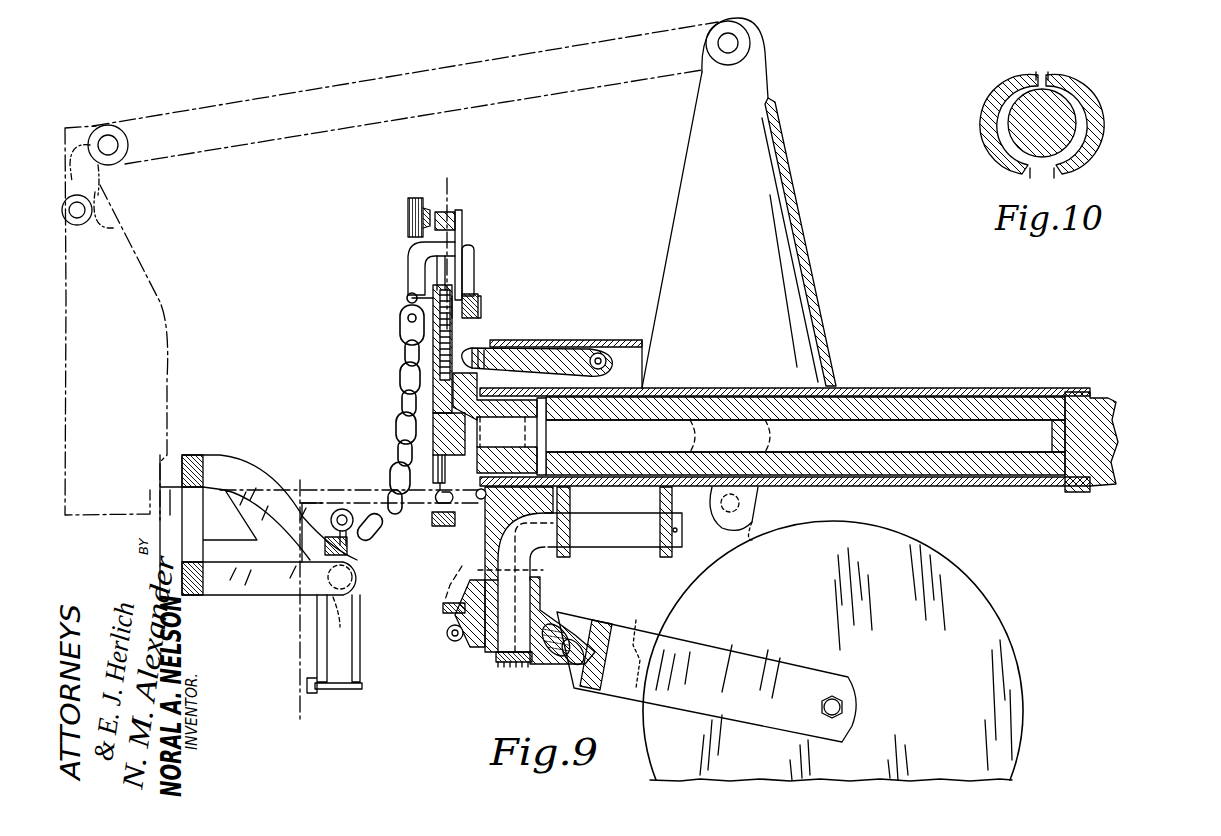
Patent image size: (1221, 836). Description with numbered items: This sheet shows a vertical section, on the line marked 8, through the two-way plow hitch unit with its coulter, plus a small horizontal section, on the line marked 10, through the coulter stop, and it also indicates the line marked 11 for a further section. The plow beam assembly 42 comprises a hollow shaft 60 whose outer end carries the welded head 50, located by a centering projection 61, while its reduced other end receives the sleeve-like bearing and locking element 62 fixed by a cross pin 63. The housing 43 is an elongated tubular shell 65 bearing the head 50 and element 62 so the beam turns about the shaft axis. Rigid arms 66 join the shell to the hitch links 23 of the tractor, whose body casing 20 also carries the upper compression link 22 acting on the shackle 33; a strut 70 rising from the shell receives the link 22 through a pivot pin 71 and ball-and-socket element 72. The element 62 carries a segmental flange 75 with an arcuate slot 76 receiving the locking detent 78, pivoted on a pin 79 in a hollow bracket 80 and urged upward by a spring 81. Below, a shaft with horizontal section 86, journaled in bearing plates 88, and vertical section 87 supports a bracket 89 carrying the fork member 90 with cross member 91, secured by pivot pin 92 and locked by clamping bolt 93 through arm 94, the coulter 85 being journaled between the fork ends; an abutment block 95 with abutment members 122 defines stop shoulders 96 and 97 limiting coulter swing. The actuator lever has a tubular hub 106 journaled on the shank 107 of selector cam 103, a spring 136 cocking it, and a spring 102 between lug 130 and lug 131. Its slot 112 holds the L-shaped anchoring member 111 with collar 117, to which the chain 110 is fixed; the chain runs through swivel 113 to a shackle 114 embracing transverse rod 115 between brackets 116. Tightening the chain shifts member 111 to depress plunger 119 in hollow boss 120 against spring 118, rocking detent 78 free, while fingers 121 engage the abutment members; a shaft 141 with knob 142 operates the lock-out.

In FIG. 9, the section line 8- 8 is at (420, 181).
In FIG. 9, the section line 10- 10 is at (475, 562).
In FIG. 9, the section line 11- 11 is at (448, 204).
In FIG. 9, the body casing 20 is at (152, 322).
In FIG. 9, the upper compression link 22 is at (533, 54).
In FIG. 9, the draft or hitch links 23 is at (745, 532).
In FIG. 9, the angle lever or shackle 33 is at (100, 188).
In FIG. 9, the plow beam assembly 42 is at (1128, 382).
In FIG. 9, the housing 43 is at (878, 382).
In FIG. 9, the head 50 is at (1118, 434).
In FIG. 9, the shaft 60 is at (930, 396).
In FIG. 9, the centering projection 61 is at (1052, 432).
In FIG. 9, the bearing and locking element 62 is at (541, 395).
In FIG. 9, the cross pin 63 is at (540, 436).
In FIG. 9, the tubular shell 65 is at (895, 487).
In FIG. 9, the rigid arms 66 is at (760, 496).
In FIG. 9, the strut 70 is at (793, 176).
In FIG. 9, the pivot pin 71 is at (748, 48).
In FIG. 9, the ball-and-socket element 72 is at (720, 62).
In FIG. 9, the segmental flange 75 is at (492, 346).
In FIG. 9, the arcuate slot 76 is at (527, 346).
In FIG. 9, the locking detent 78 is at (600, 346).
In FIG. 9, the pin 79 is at (614, 361).
In FIG. 9, the hollow bracket 80 is at (644, 344).
In FIG. 9, the spring 81 is at (641, 344).
In FIG. 9, the coulter 85 is at (972, 600).
In FIG. 9, the horizontal section 86 is at (612, 547).
In FIG. 9, the vertical section 87 is at (507, 668).
In FIG. 10, the vertical section 87 is at (1060, 118).
In FIG. 9, the bearing plates 88 is at (572, 500).
In FIG. 9, the bracket 89 is at (545, 600).
In FIG. 9, the fork member 90 is at (723, 652).
In FIG. 9, the cross member 91 is at (600, 626).
In FIG. 9, the pivot pin 92 is at (492, 655).
In FIG. 9, the clamping bolt 93 is at (572, 668).
In FIG. 9, the arm 94 is at (550, 660).
In FIG. 9, the abutment block 95 is at (472, 545).
In FIG. 10, the abutment block 95 is at (988, 110).
In FIG. 10, the fixed stop shoulder 96 is at (1040, 75).
In FIG. 10, the movable stop shoulder 97 is at (1050, 78).
In FIG. 9, the spring 102 is at (443, 610).
In FIG. 9, the selector cam 103 is at (433, 422).
In FIG. 9, the tubular hub 106 is at (495, 423).
In FIG. 9, the shank portion 107 is at (592, 442).
In FIG. 9, the chain 110 is at (400, 296).
In FIG. 9, the L-shaped anchoring member 111 is at (408, 252).
In FIG. 9, the longitudinal slot 112 is at (435, 272).
In FIG. 9, the swivel 113 is at (336, 510).
In FIG. 9, the shackle or stirrup 114 is at (360, 668).
In FIG. 9, the transverse rod 115 is at (352, 600).
In FIG. 9, the brackets 116 is at (237, 455).
In FIG. 9, the flange or collar 117 is at (463, 236).
In FIG. 9, the spring 118 is at (480, 302).
In FIG. 9, the plunger 119 is at (476, 270).
In FIG. 9, the hollow boss 120 is at (482, 312).
In FIG. 9, the fingers 121 is at (470, 530).
In FIG. 9, the abutment members 122 is at (479, 500).
In FIG. 9, the lug 130 is at (436, 490).
In FIG. 9, the lug 131 is at (452, 642).
In FIG. 9, the spring 136 is at (400, 323).
In FIG. 9, the shaft 141 is at (440, 212).
In FIG. 9, the knob 142 is at (405, 205).